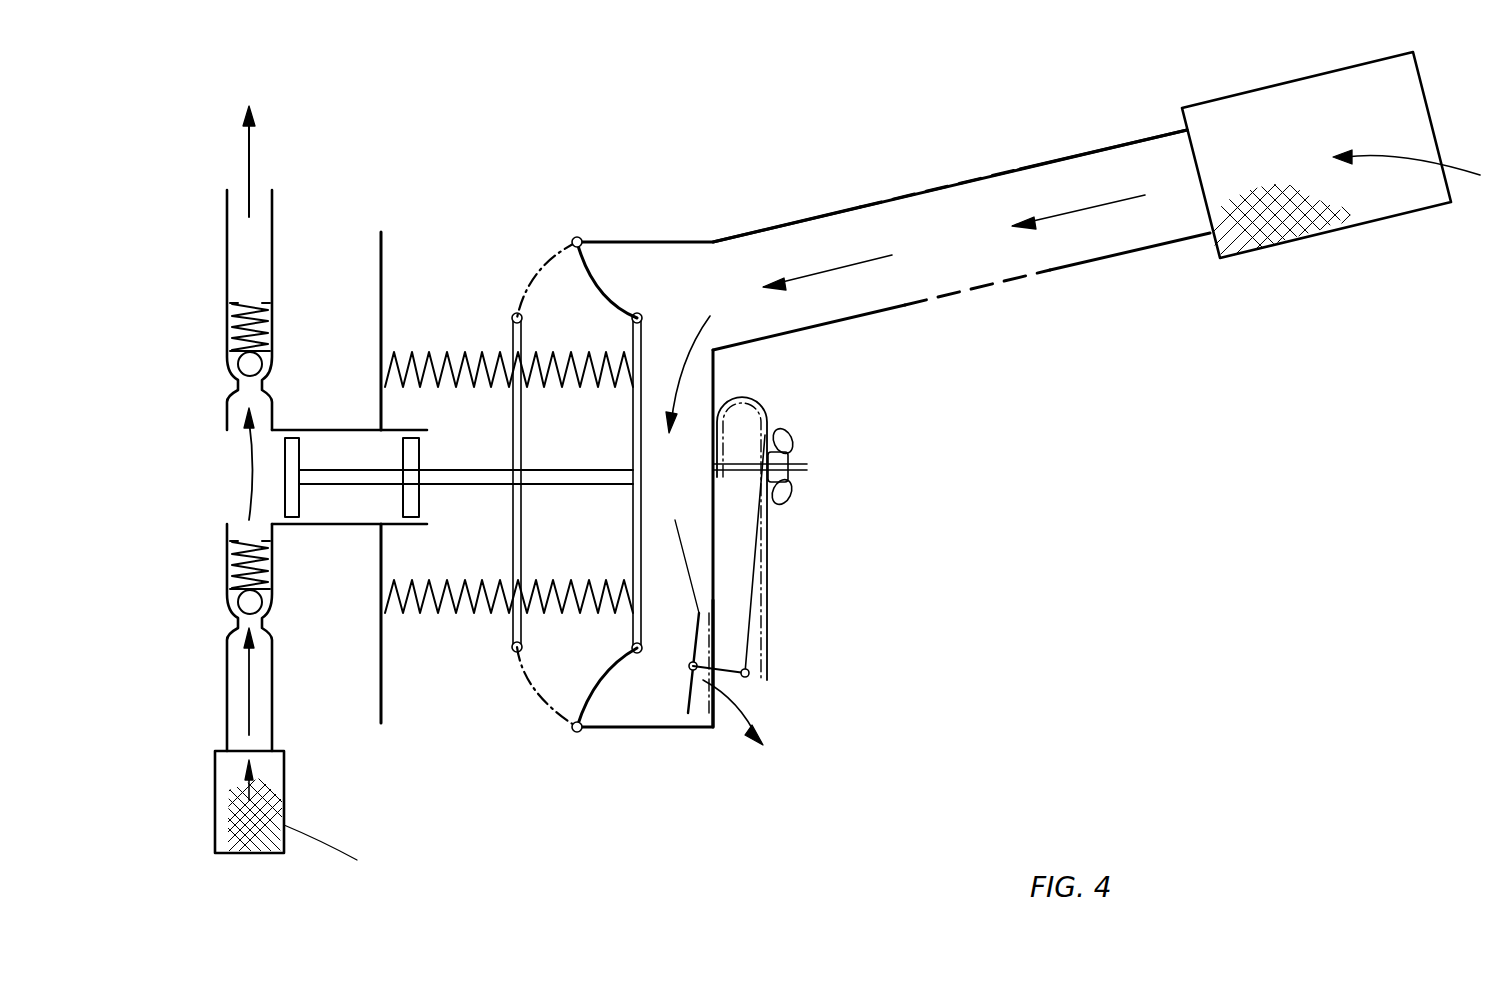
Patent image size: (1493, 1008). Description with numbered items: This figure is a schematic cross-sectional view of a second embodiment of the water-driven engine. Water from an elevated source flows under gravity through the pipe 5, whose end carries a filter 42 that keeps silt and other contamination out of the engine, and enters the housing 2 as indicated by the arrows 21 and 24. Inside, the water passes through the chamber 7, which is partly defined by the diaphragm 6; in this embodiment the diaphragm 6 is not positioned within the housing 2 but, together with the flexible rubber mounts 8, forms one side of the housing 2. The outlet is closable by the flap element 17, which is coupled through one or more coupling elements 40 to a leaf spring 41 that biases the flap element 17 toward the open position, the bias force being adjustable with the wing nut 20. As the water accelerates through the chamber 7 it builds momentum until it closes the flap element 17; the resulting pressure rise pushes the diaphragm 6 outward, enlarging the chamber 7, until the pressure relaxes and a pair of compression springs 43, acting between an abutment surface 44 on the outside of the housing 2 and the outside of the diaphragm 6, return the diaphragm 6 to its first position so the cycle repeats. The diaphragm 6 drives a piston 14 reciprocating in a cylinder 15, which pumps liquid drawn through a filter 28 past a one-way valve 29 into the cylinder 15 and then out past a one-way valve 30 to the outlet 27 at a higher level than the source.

The housing 2 is at (632, 241).
The pipe 5 is at (1085, 272).
The diaphragm 6 is at (642, 330).
The chamber 7 is at (650, 693).
The flexible rubber mounts 8 is at (595, 692).
The piston 14 is at (413, 498).
The cylinder 15 is at (310, 428).
The flap element 17 is at (682, 695).
The wing nut 20 is at (800, 446).
The arrow 21 is at (713, 368).
The arrow 24 is at (862, 265).
The outlet 27 is at (250, 170).
The filter 28 is at (232, 818).
The one-way valve 29 is at (236, 604).
The one-way valve 30 is at (238, 362).
The coupling element 40 is at (752, 680).
The leaf spring 41 is at (765, 572).
The filter 42 is at (1380, 202).
The compression springs 43 is at (462, 615).
The abutment surface 44 is at (381, 246).